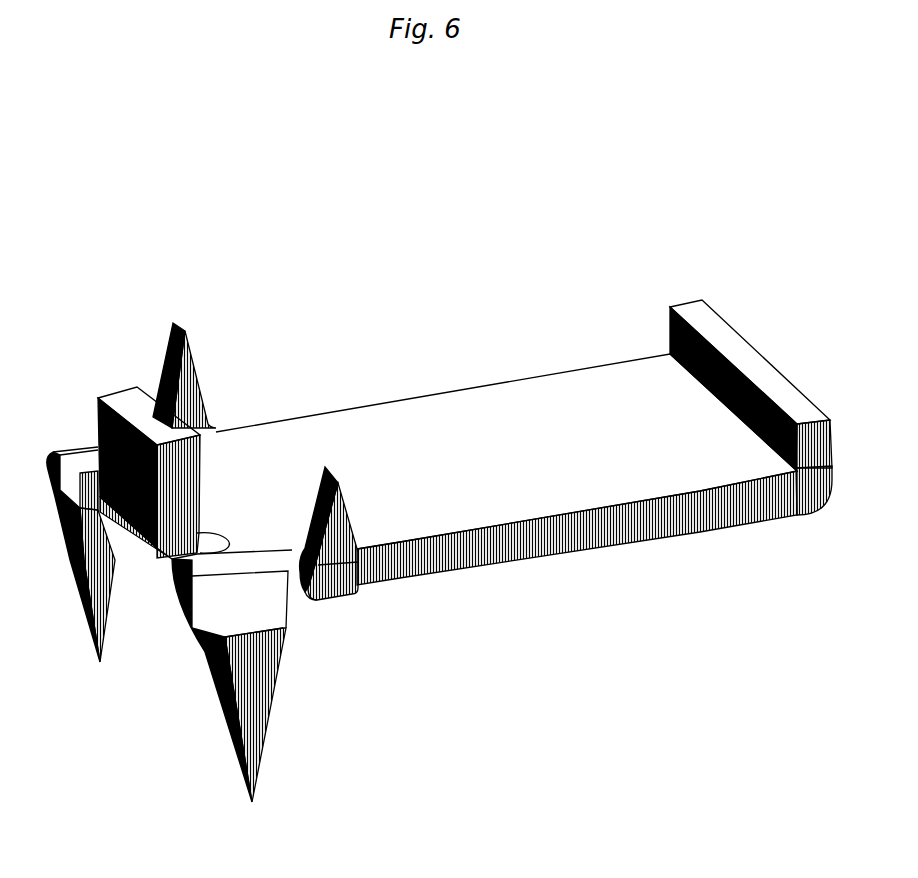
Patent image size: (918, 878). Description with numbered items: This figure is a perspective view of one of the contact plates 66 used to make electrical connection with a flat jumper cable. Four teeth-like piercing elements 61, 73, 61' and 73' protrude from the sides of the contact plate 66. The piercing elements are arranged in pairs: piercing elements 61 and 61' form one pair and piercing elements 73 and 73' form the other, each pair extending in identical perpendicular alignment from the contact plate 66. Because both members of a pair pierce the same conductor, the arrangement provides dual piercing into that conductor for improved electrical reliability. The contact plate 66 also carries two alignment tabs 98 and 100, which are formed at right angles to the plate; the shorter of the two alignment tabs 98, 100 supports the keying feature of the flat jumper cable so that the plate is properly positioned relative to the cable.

The contact plate 66 is at (449, 381).
The alignment tab 98 is at (765, 338).
The piercing element 73 is at (370, 553).
The piercing element 73' is at (213, 362).
The alignment tab 100 is at (90, 407).
The piercing element 61 is at (213, 678).
The piercing element 61' is at (76, 560).